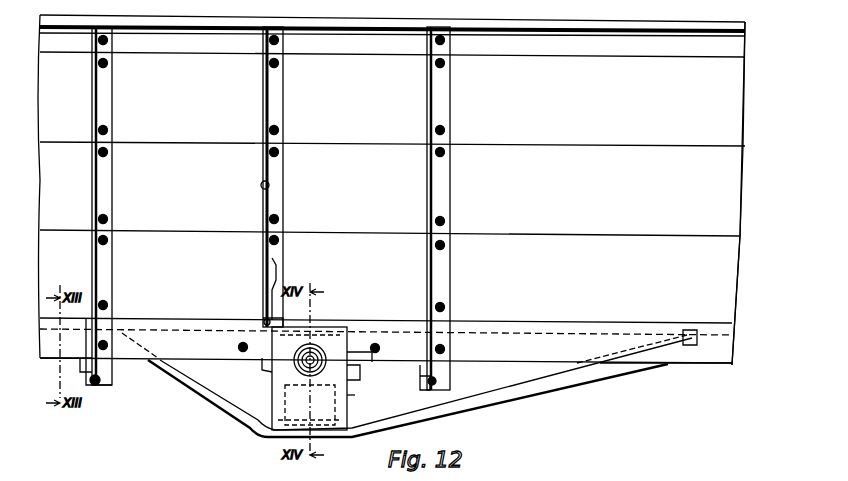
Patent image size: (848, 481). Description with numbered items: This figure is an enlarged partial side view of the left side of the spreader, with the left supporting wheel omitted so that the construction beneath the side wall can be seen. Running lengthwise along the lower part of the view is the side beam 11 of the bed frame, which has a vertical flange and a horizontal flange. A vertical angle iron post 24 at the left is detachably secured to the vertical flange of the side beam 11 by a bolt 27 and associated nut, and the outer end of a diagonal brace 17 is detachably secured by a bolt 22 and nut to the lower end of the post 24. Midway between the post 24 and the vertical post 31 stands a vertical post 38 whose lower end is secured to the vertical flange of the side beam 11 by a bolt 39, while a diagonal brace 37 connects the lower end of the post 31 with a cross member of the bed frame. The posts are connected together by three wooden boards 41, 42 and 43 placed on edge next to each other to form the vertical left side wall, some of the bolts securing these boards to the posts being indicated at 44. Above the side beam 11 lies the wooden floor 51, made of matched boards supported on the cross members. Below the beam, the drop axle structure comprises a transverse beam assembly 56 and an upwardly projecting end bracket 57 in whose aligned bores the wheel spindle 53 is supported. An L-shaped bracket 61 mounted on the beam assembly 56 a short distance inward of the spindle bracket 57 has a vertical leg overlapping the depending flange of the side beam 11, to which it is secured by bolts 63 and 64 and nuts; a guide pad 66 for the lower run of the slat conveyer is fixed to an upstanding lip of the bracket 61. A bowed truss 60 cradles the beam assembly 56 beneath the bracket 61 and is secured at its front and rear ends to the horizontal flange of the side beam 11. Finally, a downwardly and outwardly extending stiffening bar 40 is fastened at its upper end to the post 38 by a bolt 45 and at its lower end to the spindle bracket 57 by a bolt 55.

The side beam 11 is at (668, 365).
The diagonal brace 17 is at (84, 362).
The bolt 22 is at (98, 385).
The vertical angle iron post 24 is at (112, 182).
The bolt 27 is at (112, 373).
The vertical post 31 is at (450, 188).
The diagonal brace 37 is at (422, 384).
The vertical post 38 is at (280, 203).
The bolt 39 is at (262, 365).
The stiffening bar 40 is at (272, 264).
The wooden board 41 is at (733, 290).
The wooden board 42 is at (740, 218).
The wooden board 43 is at (737, 103).
The bolts 44 is at (106, 142).
The bolt 45 is at (268, 185).
The wooden floor 51 is at (640, 322).
The wheel spindle 53 is at (324, 360).
The bolt 55 is at (264, 318).
The transverse beam assembly 56 is at (347, 398).
The end bracket 57 is at (272, 400).
The bowed truss 60 is at (490, 395).
The L-shaped bracket 61 is at (372, 360).
The bolt 63 is at (240, 347).
The bolt 64 is at (379, 348).
The guide pad 66 is at (356, 372).